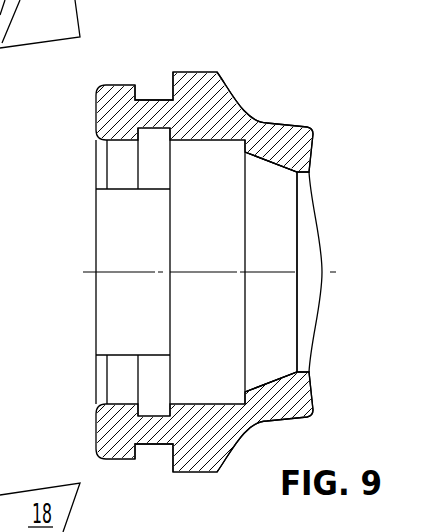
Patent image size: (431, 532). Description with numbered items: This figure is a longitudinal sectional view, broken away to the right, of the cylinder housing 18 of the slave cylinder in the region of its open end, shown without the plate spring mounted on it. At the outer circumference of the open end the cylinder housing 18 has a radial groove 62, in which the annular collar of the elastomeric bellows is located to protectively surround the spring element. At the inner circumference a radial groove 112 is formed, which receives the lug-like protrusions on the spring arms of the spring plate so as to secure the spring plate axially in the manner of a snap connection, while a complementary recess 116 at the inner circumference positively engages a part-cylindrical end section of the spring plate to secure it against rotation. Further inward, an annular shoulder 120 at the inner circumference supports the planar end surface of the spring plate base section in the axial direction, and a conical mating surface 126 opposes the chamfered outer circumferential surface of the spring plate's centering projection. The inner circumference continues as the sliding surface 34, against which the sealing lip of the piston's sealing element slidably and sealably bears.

The cylinder housing 18 is at (285, 121).
The sliding surface 34 is at (305, 259).
The radial groove 62 is at (150, 100).
The radial groove 112 is at (163, 130).
The recess 116 is at (153, 328).
The annular shoulder 120 is at (245, 143).
The mating surface 126 is at (290, 347).